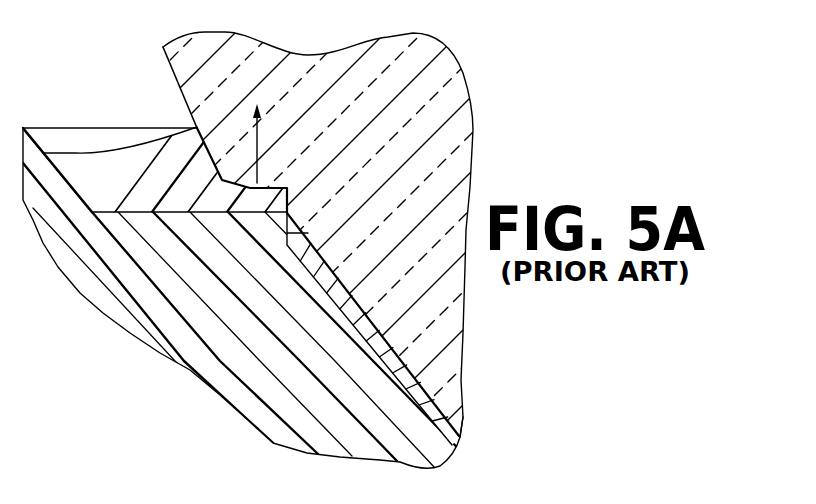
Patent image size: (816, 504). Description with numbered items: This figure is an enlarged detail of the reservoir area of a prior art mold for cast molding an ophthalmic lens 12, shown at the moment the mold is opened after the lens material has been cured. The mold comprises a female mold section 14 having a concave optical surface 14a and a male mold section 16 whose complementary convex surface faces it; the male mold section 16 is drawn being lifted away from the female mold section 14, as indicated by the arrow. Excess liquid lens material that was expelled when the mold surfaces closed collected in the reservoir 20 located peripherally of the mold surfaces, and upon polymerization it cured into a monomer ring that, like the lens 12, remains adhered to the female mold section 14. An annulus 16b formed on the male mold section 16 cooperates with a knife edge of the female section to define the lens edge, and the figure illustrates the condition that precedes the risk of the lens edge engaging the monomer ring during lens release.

The ophthalmic lens 12 is at (457, 437).
The female mold section 14 is at (125, 285).
The concave optical surface 14a is at (313, 291).
The male mold section 16 is at (460, 89).
The annulus 16b is at (288, 204).
The reservoir 20 is at (67, 133).